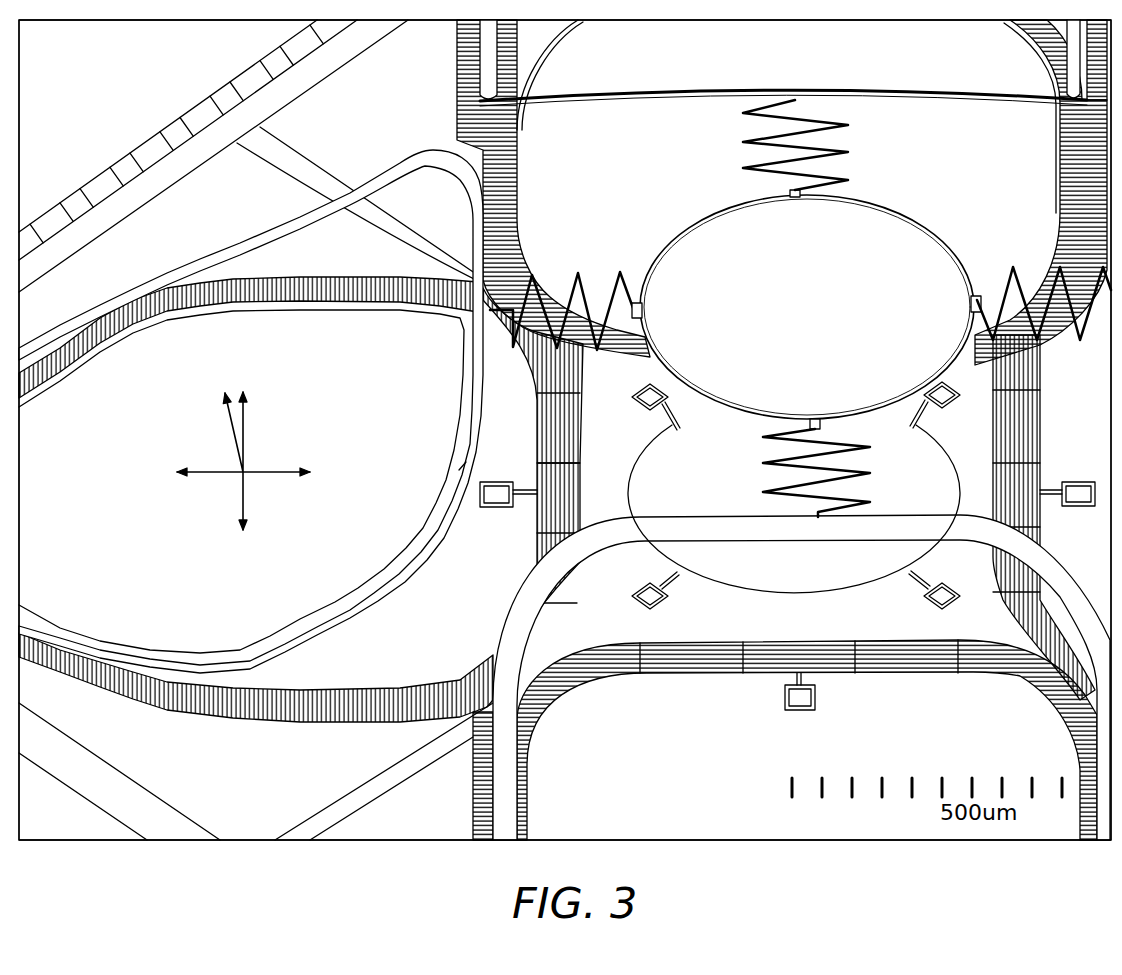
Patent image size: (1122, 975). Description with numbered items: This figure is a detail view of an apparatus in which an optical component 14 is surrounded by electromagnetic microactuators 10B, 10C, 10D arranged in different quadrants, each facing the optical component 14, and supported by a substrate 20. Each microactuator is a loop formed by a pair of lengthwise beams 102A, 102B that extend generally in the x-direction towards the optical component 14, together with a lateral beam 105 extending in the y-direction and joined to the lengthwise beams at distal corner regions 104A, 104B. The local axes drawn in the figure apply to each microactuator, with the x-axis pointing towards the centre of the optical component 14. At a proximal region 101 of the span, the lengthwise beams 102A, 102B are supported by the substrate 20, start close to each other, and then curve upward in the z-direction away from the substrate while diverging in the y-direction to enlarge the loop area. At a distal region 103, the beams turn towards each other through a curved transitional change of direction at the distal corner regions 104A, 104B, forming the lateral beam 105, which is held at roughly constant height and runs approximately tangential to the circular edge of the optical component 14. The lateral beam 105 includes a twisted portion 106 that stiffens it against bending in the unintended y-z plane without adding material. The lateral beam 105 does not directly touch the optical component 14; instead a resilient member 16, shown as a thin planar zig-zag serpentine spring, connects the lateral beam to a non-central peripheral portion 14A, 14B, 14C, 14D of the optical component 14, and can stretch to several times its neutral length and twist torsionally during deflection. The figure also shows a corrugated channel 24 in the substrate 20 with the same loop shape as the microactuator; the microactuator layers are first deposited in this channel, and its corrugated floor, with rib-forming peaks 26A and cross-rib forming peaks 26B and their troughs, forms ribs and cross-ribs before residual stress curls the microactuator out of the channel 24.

The substrate 20 is at (232, 92).
The electromagnetic microactuator 10B is at (427, 183).
The electromagnetic microactuator 10C is at (487, 63).
The electromagnetic microactuator 10D is at (507, 760).
The optical component 14 is at (900, 227).
The non-central portion 14A is at (977, 297).
The non-central portion 14B is at (638, 300).
The non-central portion 14C is at (760, 182).
The non-central portion 14D is at (852, 440).
The resilient member 16 is at (577, 273).
The corrugated channel 24 is at (410, 685).
The rib-forming peaks 26A is at (553, 513).
The cross-rib forming peaks 26B is at (563, 463).
The proximal region 101 is at (47, 460).
The lengthwise beam 102A is at (247, 643).
The lengthwise beam 102B is at (247, 257).
The distal region 103 is at (400, 405).
The distal corner region 104A is at (407, 557).
The distal corner region 104B is at (382, 224).
The lateral beam 105 is at (463, 440).
The twisted portion 106 is at (476, 357).